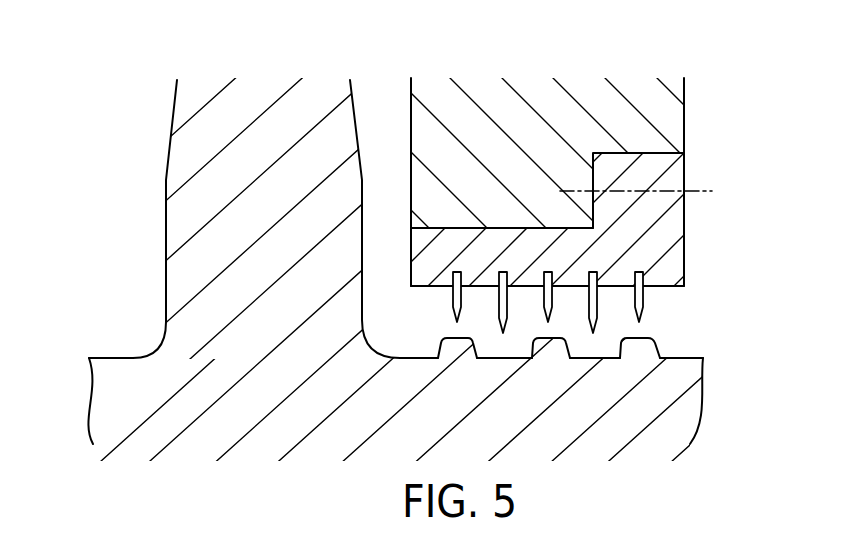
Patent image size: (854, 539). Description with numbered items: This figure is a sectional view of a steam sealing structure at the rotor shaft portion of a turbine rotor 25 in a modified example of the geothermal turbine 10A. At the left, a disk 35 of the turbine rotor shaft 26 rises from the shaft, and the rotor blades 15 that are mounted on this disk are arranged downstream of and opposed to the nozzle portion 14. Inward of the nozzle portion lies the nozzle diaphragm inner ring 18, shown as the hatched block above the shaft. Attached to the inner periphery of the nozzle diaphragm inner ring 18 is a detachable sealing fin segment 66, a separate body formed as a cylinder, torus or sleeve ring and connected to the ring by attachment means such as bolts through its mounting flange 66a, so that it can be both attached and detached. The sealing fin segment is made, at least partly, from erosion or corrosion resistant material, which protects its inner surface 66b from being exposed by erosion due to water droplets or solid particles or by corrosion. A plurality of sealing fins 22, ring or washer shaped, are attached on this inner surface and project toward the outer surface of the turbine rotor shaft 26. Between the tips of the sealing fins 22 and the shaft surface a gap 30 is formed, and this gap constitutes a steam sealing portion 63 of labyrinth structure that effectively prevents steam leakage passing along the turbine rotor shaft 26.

The geothermal turbine 10A is at (135, 112).
The nozzle portion 14 is at (693, 68).
The rotor blades 15 is at (148, 183).
The nozzle diaphragm inner ring 18 is at (650, 116).
The sealing fins 22 is at (647, 293).
The turbine rotor 25 is at (712, 428).
The turbine rotor shaft 26 is at (672, 387).
The gap 30 is at (640, 330).
The disk 35 is at (172, 267).
The steam sealing portion 63 is at (662, 312).
The detachable sealing fin segment 66 is at (667, 235).
The mounting flange 66a is at (672, 170).
The inner surface 66b is at (428, 287).